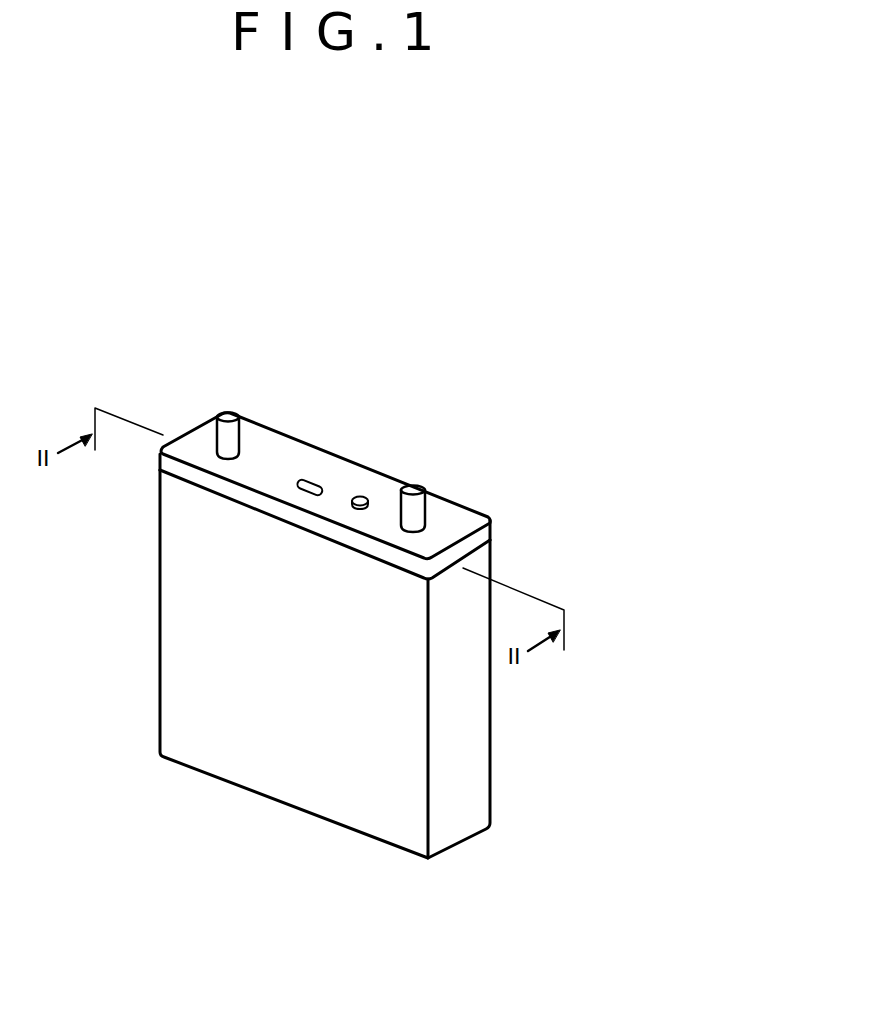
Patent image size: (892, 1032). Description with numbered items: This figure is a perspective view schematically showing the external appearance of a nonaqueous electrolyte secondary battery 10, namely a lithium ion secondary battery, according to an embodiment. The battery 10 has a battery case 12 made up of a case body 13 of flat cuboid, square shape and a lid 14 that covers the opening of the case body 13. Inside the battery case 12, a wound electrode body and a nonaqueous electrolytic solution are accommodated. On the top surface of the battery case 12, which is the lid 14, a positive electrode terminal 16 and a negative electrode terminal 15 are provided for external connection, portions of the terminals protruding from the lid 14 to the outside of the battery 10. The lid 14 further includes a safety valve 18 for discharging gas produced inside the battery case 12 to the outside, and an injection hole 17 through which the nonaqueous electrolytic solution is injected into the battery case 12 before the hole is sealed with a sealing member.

The nonaqueous electrolyte secondary battery 10 is at (556, 291).
The battery case 12 is at (293, 766).
The case body 13 is at (480, 783).
The lid 14 is at (488, 537).
The negative electrode terminal 15 is at (418, 486).
The positive electrode terminal 16 is at (228, 412).
The injection hole 17 is at (361, 496).
The safety valve 18 is at (313, 481).